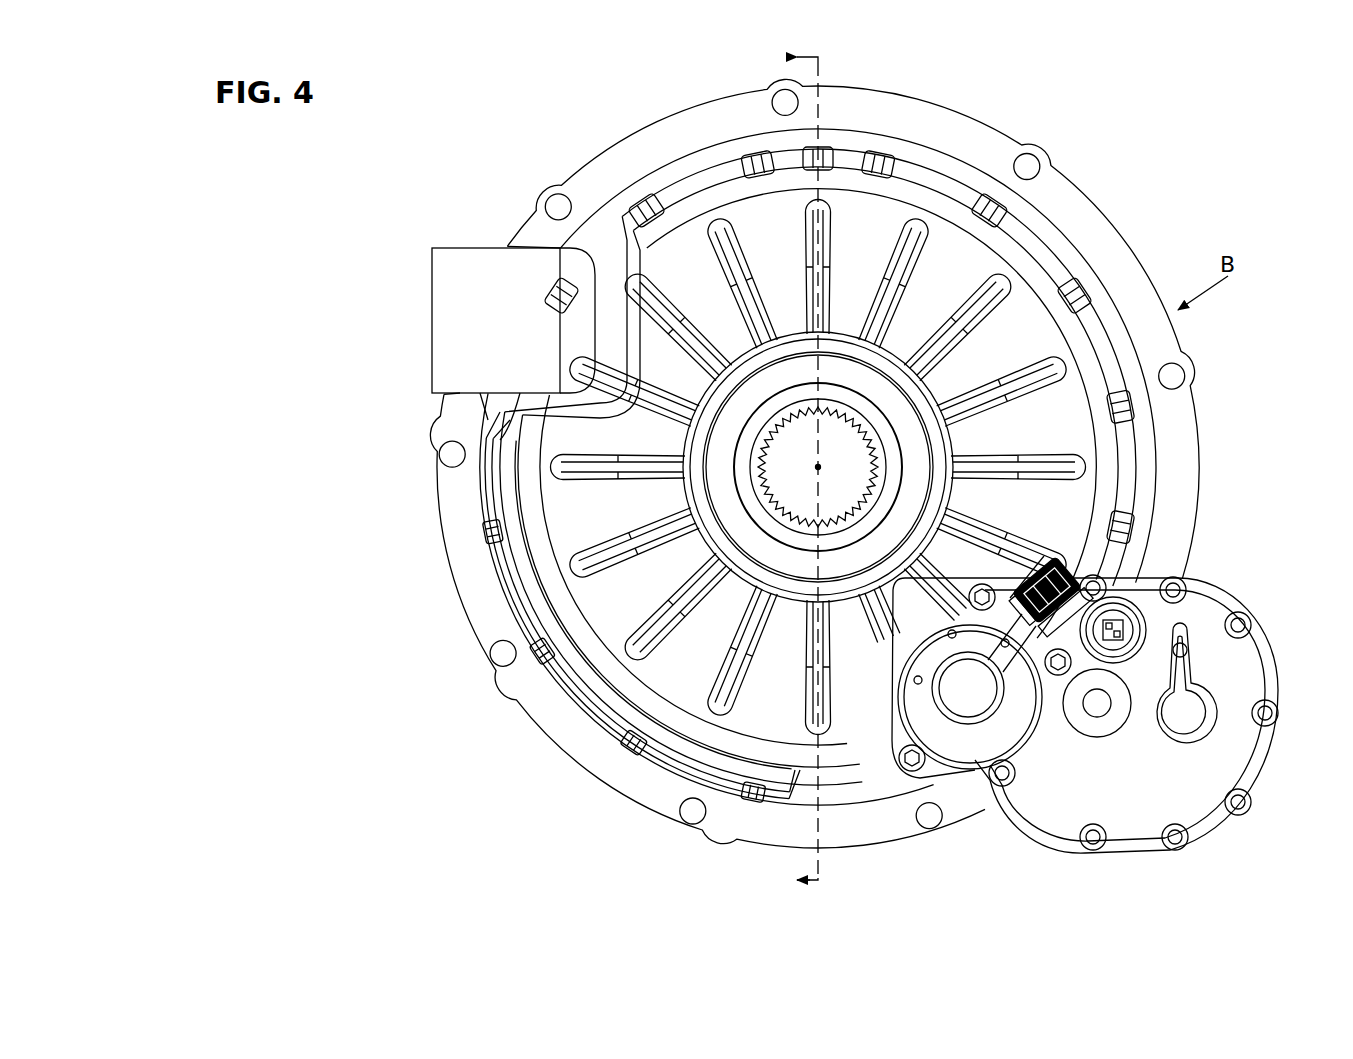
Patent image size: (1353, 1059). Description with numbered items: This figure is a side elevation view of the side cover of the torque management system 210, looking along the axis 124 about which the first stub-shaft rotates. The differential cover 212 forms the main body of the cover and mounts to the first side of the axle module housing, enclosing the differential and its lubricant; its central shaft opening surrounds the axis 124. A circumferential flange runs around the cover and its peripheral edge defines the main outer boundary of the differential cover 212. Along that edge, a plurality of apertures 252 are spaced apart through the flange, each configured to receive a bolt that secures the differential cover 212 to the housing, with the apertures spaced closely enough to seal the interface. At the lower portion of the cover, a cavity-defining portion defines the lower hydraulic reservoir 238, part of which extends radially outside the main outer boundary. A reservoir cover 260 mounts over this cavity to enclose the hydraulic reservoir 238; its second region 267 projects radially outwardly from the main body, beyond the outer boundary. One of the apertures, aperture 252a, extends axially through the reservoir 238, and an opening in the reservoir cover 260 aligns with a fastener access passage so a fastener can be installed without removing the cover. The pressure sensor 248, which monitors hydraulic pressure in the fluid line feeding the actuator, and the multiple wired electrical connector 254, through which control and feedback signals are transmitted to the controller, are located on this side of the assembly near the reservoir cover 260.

The torque management system 210 is at (891, 470).
The differential cover 212 is at (814, 473).
The axis 124 is at (818, 467).
The apertures 252 is at (681, 824).
The aperture 252a is at (1100, 710).
The multiple wired electrical connector 254 is at (1077, 570).
The pressure sensor 248 is at (1180, 580).
The lower hydraulic reservoir 238 is at (1122, 663).
The reservoir cover 260 is at (1205, 822).
The second region 267 is at (1108, 790).